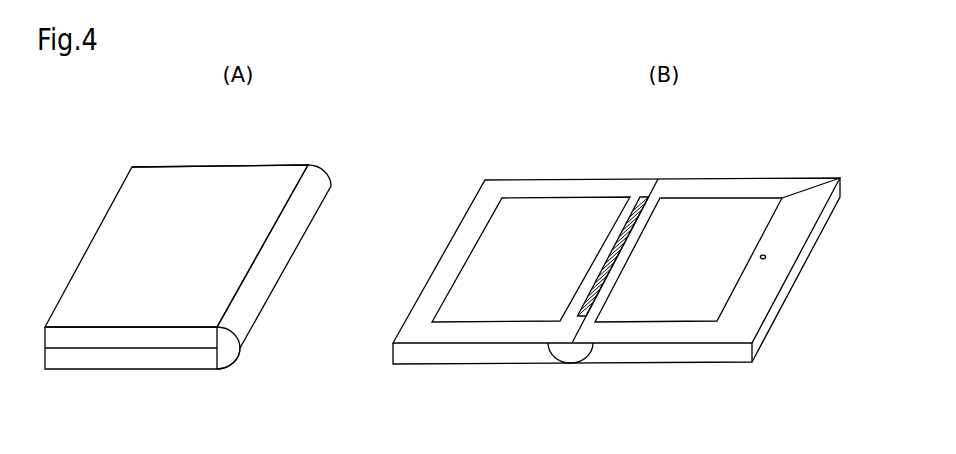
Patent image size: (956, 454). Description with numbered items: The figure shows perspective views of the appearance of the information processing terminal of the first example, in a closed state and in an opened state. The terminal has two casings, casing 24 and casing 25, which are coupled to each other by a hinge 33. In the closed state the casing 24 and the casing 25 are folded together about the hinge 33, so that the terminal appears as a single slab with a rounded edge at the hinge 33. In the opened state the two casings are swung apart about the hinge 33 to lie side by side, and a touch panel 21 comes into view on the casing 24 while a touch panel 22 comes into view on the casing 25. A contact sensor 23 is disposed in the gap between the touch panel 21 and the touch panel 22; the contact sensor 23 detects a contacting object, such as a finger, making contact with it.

The touch panel 21 is at (517, 213).
The touch panel 22 is at (738, 208).
The contact sensor 23 is at (606, 249).
The casing 24 is at (102, 357).
The casing 25 is at (228, 170).
The hinge 33 is at (318, 180).